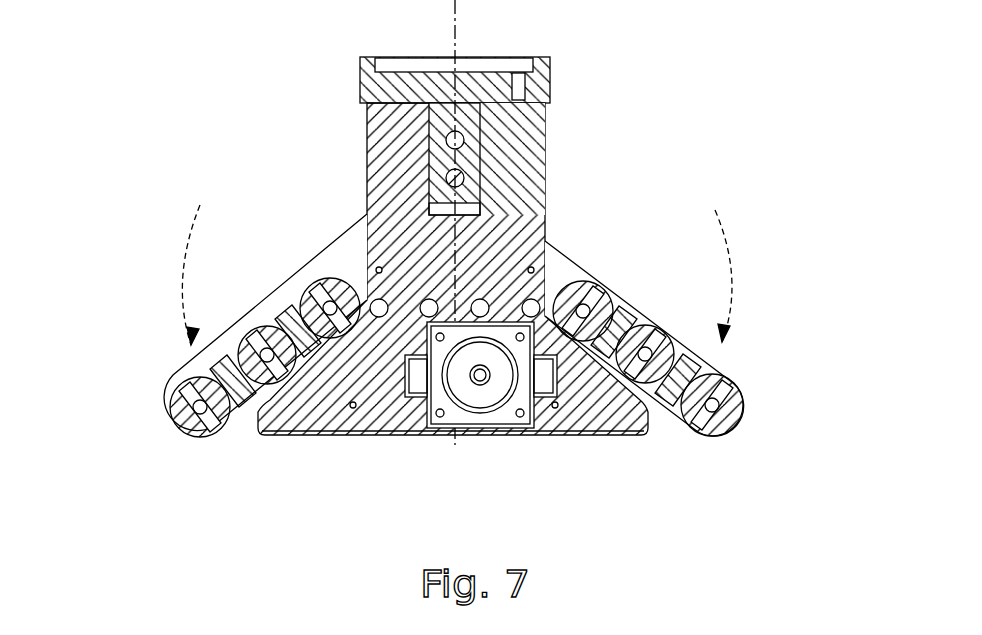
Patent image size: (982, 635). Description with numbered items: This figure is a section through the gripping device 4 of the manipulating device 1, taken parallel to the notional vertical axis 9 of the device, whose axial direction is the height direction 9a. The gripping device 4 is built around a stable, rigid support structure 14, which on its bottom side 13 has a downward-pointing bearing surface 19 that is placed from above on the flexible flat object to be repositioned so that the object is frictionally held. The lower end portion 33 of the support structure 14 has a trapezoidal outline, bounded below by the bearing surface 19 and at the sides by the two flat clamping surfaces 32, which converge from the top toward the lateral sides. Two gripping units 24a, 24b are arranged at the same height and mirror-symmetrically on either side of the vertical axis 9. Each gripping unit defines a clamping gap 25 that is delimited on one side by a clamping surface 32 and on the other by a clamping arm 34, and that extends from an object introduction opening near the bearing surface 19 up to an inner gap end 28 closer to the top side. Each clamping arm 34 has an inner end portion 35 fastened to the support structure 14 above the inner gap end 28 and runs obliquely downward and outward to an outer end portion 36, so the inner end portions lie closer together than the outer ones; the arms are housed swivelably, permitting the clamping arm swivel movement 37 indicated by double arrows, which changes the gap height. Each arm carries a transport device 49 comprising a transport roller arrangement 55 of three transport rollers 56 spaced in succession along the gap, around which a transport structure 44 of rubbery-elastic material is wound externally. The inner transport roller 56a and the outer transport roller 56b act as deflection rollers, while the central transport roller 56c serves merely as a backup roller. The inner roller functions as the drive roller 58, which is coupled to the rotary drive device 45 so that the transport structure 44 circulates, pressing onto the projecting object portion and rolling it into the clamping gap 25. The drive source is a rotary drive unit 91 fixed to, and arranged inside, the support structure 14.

The manipulating device 1 is at (700, 102).
The gripping device 4 is at (573, 112).
The vertical axis 9 is at (493, 222).
The height direction 9a is at (457, 13).
The bottom side 13 is at (610, 441).
The support structure 14 is at (383, 130).
The bearing surface 19 is at (316, 437).
The first gripping unit 24a is at (152, 403).
The second gripping unit 24b is at (772, 360).
The clamping gap 25 is at (262, 413).
The inner gap end 28 is at (297, 322).
The clamping surface 32 is at (275, 330).
The end portion 33 is at (551, 419).
The clamping arm 34 is at (233, 335).
The inner end portion 35 is at (323, 268).
The outer end portion 36 is at (167, 425).
The clamping arm swivel movement 37 is at (197, 262).
The transport structure 44 is at (237, 416).
The rotary drive device 45 is at (468, 432).
The transport device 49 is at (172, 375).
The transport roller arrangement 55 is at (302, 376).
The transport rollers 56 is at (470, 329).
The inner transport roller 56a is at (343, 285).
The outer transport roller 56b is at (188, 424).
The central transport roller 56c is at (207, 350).
The drive roller 58 is at (470, 329).
The rotary drive unit 91 is at (493, 421).